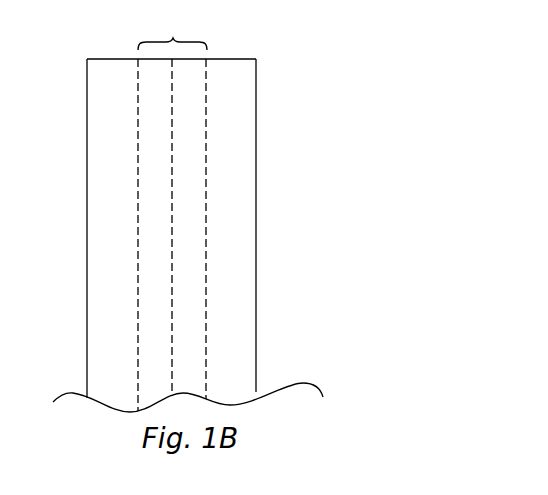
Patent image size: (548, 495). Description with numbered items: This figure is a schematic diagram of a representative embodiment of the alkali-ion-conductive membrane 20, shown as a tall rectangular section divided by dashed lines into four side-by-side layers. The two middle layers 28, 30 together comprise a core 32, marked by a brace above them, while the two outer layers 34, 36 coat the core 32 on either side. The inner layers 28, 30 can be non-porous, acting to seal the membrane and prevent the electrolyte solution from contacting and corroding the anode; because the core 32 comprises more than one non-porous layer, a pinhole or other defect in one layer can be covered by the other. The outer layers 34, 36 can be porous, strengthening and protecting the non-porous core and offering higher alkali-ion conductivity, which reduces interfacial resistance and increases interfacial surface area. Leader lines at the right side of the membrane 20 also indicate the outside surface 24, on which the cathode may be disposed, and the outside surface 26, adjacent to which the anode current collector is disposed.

The alkali-ion-conductive membrane 20 is at (263, 111).
The outside surface 24 is at (256, 303).
The outside surface 26 is at (256, 252).
The middle layer 28 is at (144, 101).
The middle layer 30 is at (179, 101).
The core 32 is at (172, 33).
The outer layer 34 is at (101, 101).
The outer layer 36 is at (219, 101).